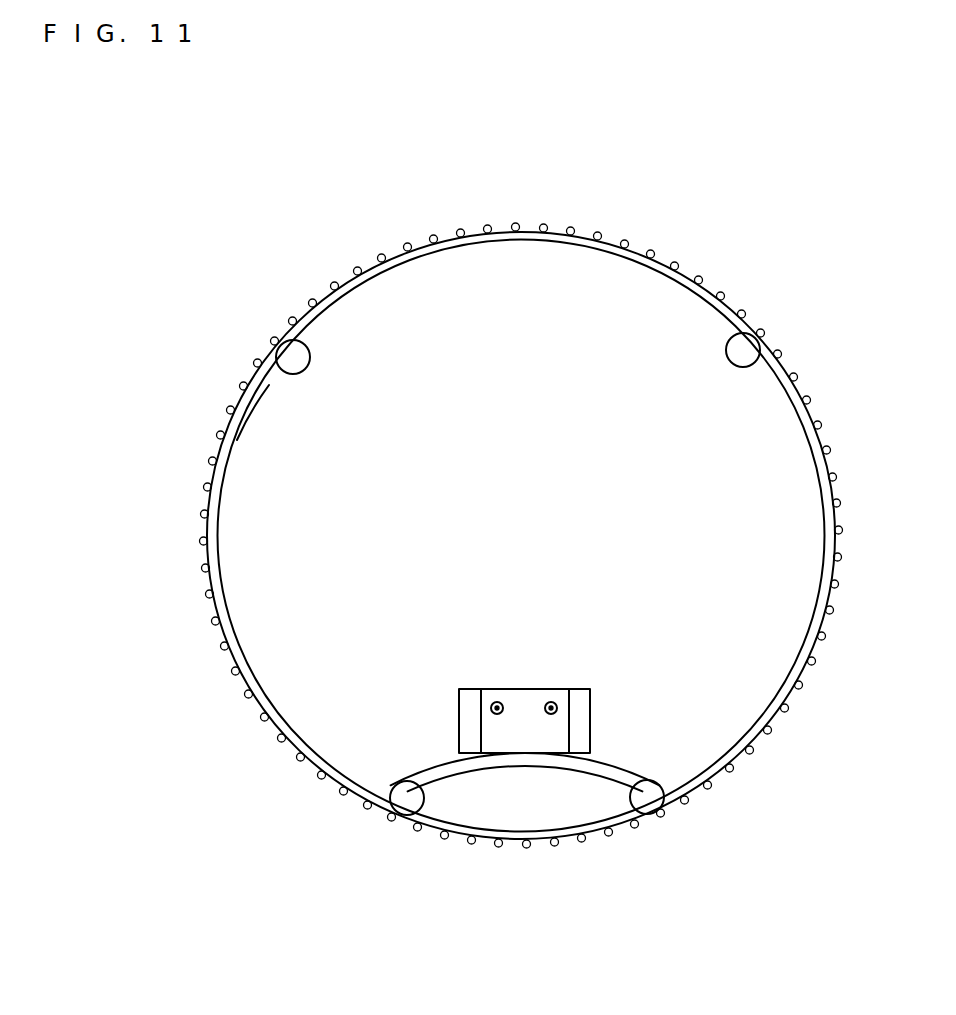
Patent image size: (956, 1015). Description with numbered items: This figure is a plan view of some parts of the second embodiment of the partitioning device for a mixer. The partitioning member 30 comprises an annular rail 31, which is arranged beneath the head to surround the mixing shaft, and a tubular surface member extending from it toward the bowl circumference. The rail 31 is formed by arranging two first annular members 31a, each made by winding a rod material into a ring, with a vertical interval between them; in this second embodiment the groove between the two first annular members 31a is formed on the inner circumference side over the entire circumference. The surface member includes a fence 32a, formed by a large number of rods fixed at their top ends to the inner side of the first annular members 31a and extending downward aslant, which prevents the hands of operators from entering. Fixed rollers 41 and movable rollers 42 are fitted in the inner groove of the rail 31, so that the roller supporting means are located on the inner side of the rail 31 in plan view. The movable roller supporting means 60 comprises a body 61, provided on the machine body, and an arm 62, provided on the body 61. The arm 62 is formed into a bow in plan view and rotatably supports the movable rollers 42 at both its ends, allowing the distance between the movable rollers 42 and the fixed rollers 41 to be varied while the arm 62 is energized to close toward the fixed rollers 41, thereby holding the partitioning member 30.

The partitioning member 30 is at (346, 278).
The annular rail 31 is at (219, 545).
The first annular member 31a is at (234, 432).
The fence 32a is at (228, 408).
The fixed roller 41 is at (308, 370).
The movable roller 42 is at (398, 782).
The movable roller supporting means 60 is at (525, 688).
The body 61 is at (578, 698).
The arm 62 is at (610, 767).